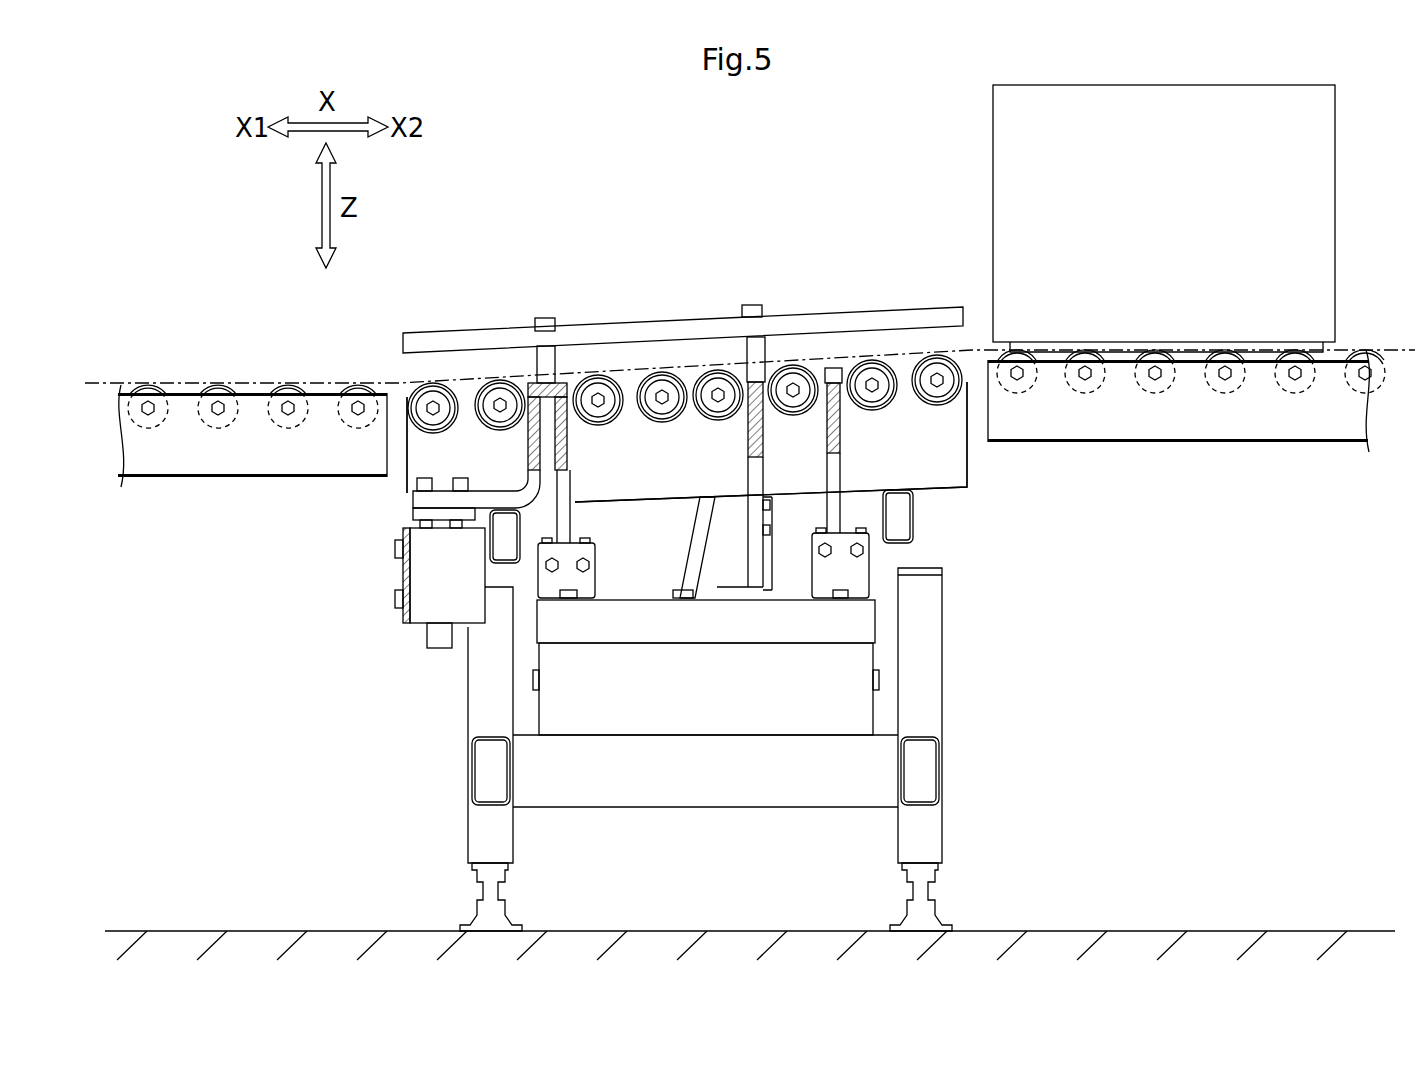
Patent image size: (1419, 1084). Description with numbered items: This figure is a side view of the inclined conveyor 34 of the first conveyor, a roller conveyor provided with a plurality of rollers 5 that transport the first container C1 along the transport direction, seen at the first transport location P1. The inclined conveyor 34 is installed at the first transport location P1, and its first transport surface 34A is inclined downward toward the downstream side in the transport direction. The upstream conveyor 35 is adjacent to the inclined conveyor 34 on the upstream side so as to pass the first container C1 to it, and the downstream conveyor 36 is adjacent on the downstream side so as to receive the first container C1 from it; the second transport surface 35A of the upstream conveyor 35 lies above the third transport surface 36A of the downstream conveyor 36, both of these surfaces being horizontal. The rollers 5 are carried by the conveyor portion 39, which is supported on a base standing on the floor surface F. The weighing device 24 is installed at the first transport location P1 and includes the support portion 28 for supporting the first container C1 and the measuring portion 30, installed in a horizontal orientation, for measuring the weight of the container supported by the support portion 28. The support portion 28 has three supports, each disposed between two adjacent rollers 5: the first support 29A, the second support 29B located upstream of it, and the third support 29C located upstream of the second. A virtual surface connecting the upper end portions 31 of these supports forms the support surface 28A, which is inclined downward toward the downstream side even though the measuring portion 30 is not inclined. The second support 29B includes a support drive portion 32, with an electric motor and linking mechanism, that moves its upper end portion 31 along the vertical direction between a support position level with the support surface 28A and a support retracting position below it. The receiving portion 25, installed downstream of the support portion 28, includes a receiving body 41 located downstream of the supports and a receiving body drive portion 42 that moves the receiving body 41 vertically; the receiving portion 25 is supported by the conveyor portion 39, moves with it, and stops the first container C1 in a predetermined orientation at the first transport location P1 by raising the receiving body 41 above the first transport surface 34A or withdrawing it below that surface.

The rollers 5 is at (288, 385).
The weighing device 24 is at (527, 660).
The receiving portion 25 is at (380, 571).
The support portion 28 is at (860, 630).
The support surface 28A is at (640, 424).
The first support 29A is at (577, 443).
The second support 29B is at (750, 417).
The third support 29C is at (841, 417).
The measuring portion 30 is at (810, 715).
The upper end portions 31 is at (552, 378).
The support drive portion 32 is at (733, 585).
The inclined conveyor 34 is at (957, 507).
The first transport surface 34A is at (628, 328).
The upstream conveyor 35 is at (1207, 428).
The second transport surface 35A is at (1382, 350).
The downstream conveyor 36 is at (237, 463).
The third transport surface 36A is at (187, 388).
The conveyor portion 39 is at (957, 463).
The receiving body 41 is at (530, 440).
The receiving body drive portion 42 is at (413, 602).
The first container C1 is at (1012, 135).
The first transport location P1 is at (706, 288).
The floor surface F is at (1133, 930).